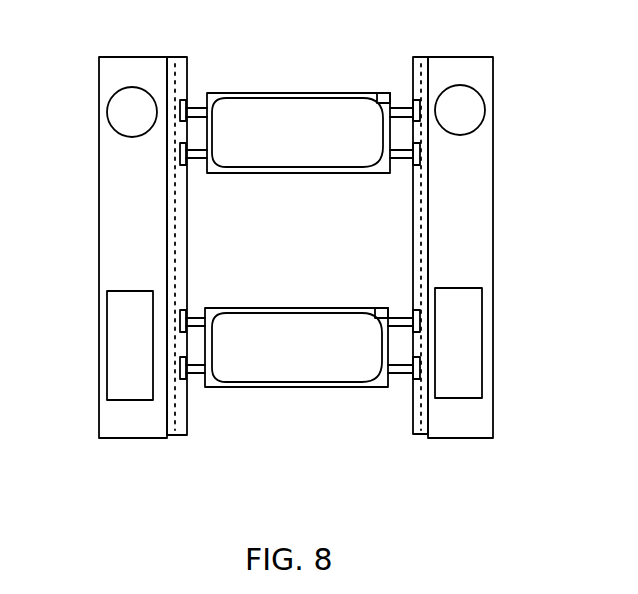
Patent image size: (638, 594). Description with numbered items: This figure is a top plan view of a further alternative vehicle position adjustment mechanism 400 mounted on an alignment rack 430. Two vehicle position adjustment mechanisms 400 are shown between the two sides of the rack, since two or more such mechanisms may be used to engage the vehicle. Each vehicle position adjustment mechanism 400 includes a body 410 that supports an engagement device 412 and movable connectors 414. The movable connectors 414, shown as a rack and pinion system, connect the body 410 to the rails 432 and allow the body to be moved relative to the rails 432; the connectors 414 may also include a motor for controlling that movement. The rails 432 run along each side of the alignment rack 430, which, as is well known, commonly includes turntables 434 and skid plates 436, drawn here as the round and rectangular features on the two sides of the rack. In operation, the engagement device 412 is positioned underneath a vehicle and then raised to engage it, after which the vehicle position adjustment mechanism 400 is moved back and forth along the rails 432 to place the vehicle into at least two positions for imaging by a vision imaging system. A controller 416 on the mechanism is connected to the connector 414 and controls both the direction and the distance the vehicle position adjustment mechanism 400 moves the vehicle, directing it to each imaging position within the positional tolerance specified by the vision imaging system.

The vehicle position adjustment mechanism 400 is at (300, 234).
The body 410 is at (250, 175).
The engagement device 412 is at (330, 175).
The movable connectors 414 is at (199, 152).
The controller 416 is at (384, 93).
The alignment rack 430 is at (483, 55).
The rails 432 is at (177, 438).
The turntables 434 is at (107, 113).
The skid plates 436 is at (107, 357).